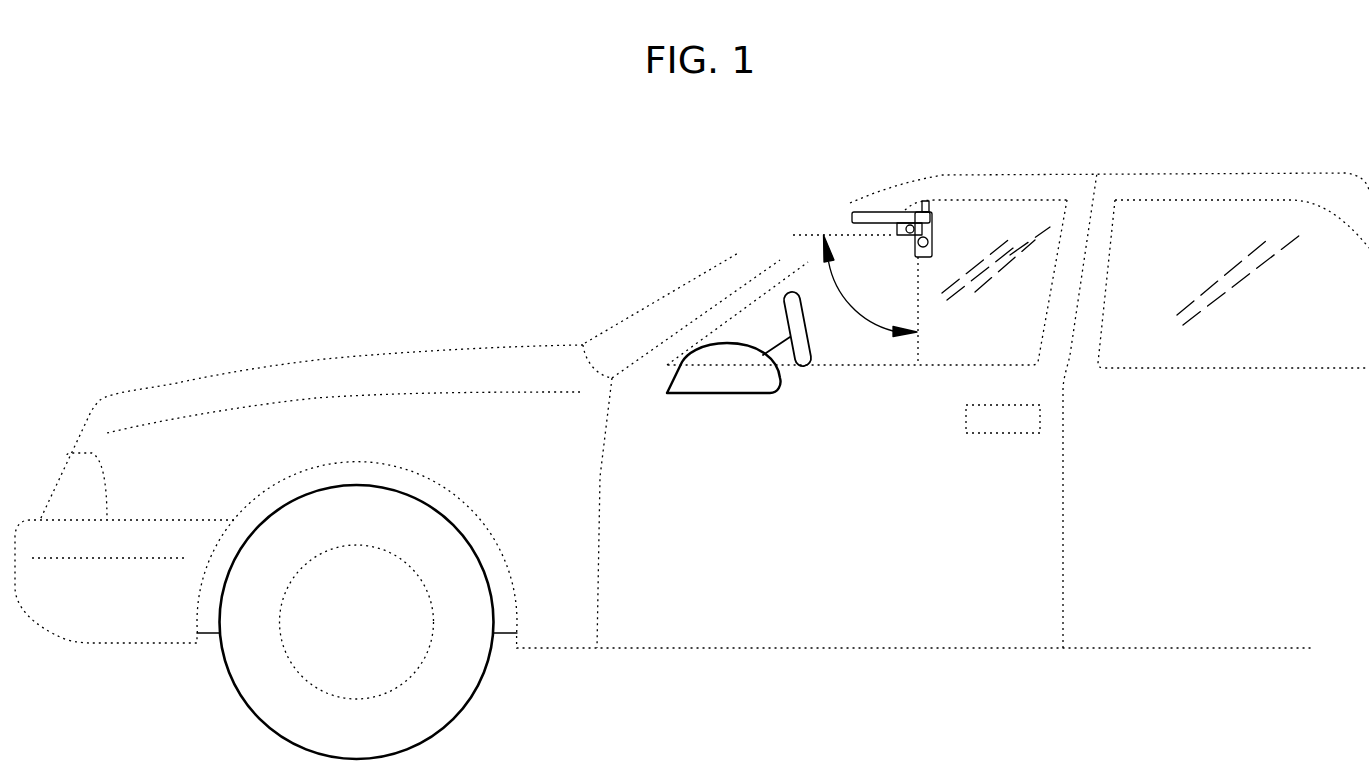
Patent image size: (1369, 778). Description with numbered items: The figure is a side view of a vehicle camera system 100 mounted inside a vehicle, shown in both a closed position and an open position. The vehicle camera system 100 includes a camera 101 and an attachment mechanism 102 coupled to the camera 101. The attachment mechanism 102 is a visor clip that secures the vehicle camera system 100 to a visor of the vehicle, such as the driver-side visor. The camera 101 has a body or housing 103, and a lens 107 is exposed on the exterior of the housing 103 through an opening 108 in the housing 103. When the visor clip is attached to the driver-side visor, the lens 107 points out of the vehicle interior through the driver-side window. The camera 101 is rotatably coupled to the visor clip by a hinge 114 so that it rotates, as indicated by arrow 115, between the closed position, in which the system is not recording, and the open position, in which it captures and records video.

The vehicle camera system 100 is at (893, 208).
The camera 101 is at (935, 222).
The attachment mechanism 102 is at (930, 213).
The housing 103 is at (897, 229).
The lens 107 is at (910, 229).
The opening 108 is at (919, 201).
The hinge 114 is at (937, 228).
The arrow 115 is at (857, 312).